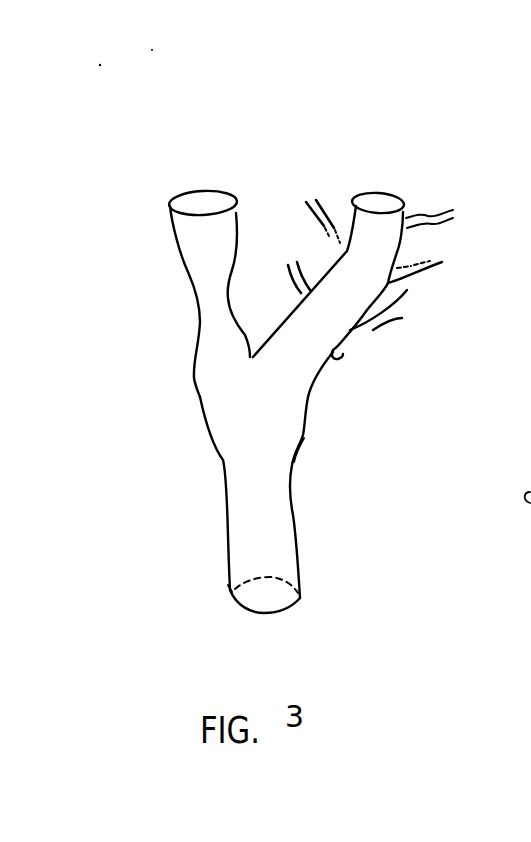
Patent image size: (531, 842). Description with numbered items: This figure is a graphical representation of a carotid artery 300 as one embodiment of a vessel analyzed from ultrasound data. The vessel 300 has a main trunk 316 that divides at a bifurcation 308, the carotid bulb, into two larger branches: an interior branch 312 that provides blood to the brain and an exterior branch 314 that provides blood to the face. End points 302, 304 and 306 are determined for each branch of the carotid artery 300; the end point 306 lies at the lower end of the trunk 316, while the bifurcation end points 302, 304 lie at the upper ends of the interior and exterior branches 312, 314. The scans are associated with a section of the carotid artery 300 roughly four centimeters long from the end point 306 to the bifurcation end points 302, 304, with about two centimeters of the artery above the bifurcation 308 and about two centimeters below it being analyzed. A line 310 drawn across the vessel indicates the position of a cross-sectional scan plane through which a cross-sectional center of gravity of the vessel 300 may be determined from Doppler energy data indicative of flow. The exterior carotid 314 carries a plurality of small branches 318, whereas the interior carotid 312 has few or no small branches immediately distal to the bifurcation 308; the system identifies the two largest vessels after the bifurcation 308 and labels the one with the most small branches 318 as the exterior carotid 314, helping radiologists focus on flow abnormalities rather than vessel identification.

The carotid artery 300 is at (141, 468).
The end point 302 is at (170, 203).
The end point 304 is at (400, 202).
The end point 306 is at (310, 603).
The bifurcation 308 is at (182, 370).
The line 310 is at (407, 290).
The interior branch 312 is at (164, 244).
The exterior branch 314 is at (347, 352).
The trunk 316 is at (295, 508).
The small branches 318 is at (307, 260).